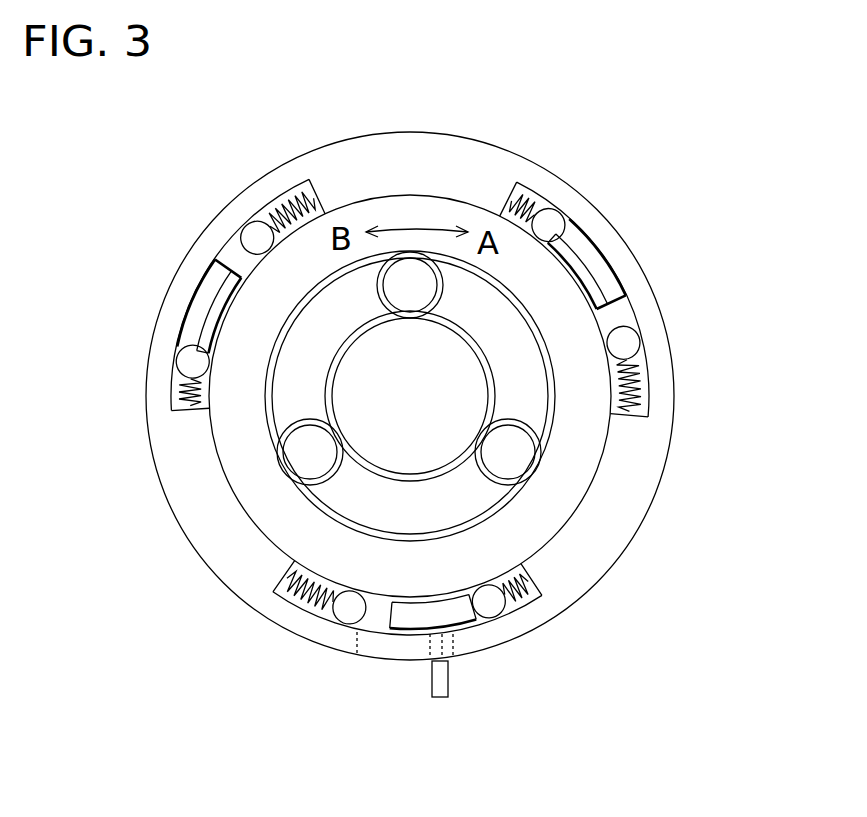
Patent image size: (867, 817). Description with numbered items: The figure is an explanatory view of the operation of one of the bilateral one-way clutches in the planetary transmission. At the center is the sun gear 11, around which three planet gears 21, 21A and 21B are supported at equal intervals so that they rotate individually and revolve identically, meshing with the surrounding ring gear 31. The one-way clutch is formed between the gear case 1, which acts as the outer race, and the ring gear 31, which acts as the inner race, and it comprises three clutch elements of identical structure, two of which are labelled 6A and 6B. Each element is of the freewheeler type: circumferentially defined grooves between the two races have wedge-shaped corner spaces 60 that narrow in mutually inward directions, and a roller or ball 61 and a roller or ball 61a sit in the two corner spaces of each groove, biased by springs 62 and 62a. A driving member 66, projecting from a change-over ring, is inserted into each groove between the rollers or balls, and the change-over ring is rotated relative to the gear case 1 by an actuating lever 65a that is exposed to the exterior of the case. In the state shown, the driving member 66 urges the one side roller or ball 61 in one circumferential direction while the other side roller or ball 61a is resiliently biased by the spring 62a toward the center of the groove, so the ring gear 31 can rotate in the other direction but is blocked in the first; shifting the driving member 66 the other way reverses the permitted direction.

The gear case 1 is at (182, 507).
The ring gear 31 is at (262, 513).
The sun gear 11 is at (463, 378).
The planet gear 21 is at (413, 270).
The planet gear 21A is at (520, 465).
The planet gear 21B is at (298, 452).
The clutch element 6A is at (380, 628).
The clutch element 6B is at (220, 268).
The wedge-shaped corner space 60 is at (582, 240).
The driving member 66 is at (582, 268).
The roller or ball 61 is at (540, 224).
The roller or ball 61a is at (625, 343).
The spring 62 is at (527, 212).
The spring 62a is at (645, 398).
The actuating lever 65a is at (447, 684).